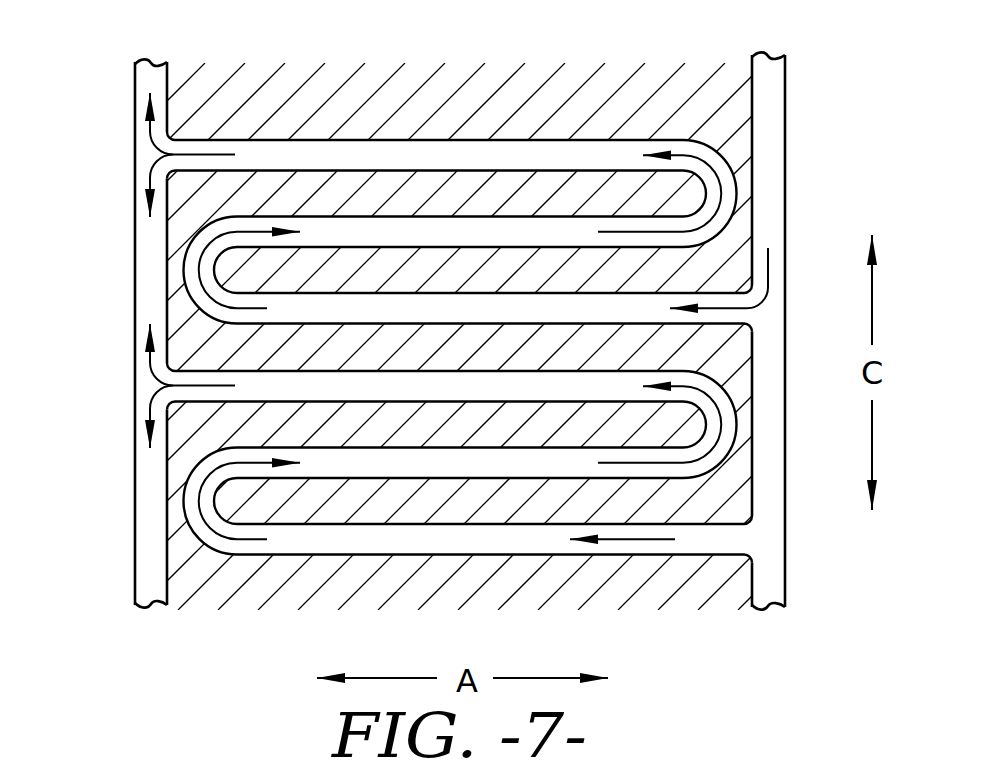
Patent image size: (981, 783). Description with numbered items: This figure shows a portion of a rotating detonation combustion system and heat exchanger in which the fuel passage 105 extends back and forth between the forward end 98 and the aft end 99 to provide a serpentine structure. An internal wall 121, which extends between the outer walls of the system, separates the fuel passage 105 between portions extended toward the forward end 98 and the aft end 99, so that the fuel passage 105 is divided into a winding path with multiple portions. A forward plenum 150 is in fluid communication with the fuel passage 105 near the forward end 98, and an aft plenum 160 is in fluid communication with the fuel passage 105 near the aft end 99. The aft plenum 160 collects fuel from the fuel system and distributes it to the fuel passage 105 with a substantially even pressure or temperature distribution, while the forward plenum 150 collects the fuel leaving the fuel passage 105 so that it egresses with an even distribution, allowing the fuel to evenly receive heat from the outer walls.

The fuel passage 105 is at (485, 157).
The internal wall 121 is at (459, 438).
The forward plenum 150 is at (150, 258).
The aft plenum 160 is at (770, 193).
The forward end 98 is at (114, 332).
The aft end 99 is at (844, 328).